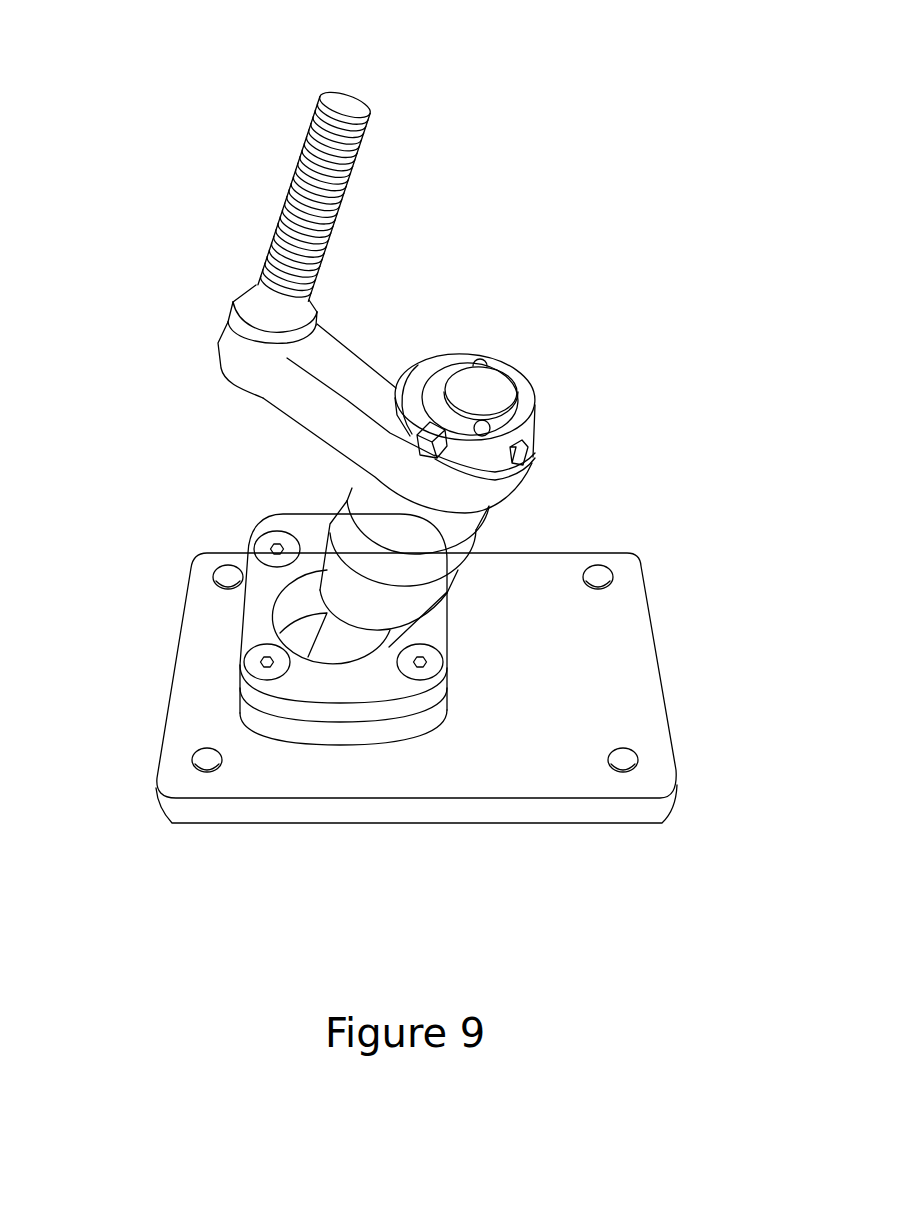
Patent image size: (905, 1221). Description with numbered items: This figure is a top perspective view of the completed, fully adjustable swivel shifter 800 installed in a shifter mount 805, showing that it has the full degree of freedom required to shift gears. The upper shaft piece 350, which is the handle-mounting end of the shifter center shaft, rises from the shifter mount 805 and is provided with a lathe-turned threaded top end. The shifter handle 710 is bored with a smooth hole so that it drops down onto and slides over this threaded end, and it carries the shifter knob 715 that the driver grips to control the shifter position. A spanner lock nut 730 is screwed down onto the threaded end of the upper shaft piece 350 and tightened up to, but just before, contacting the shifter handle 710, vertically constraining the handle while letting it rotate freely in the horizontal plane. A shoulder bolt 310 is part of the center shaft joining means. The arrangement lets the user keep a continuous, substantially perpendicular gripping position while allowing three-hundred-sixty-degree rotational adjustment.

The fully adjustable swivel shifter 800 is at (202, 207).
The shifter knob 715 is at (347, 103).
The shifter handle 710 is at (233, 355).
The spanner lock nut 730 is at (532, 438).
The shoulder bolt 310 is at (492, 380).
The upper shaft piece 350 is at (350, 493).
The shifter mount 805 is at (653, 710).